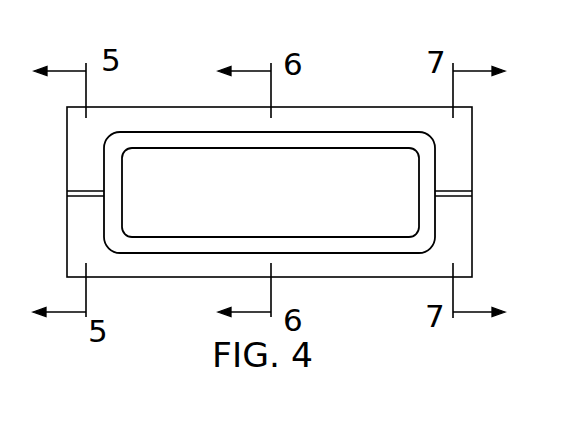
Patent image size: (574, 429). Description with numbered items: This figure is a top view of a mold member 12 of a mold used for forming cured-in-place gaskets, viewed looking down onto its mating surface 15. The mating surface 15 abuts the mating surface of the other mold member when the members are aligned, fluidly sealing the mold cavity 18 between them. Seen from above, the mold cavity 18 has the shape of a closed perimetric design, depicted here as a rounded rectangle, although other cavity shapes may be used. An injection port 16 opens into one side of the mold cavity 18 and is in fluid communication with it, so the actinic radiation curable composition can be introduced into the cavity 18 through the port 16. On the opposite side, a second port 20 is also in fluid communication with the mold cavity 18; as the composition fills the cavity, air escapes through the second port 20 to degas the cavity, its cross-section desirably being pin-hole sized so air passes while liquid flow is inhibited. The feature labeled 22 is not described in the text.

The upper mold member 12 is at (326, 107).
The mating surface 15 is at (458, 147).
The injection port 16 is at (71, 191).
The mold cavity 18 is at (255, 139).
The second port 20 is at (462, 192).
The corner portion 22 is at (435, 225).